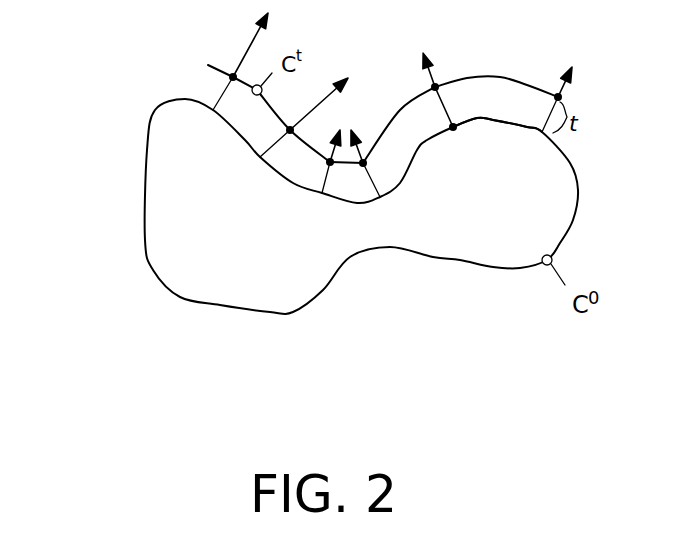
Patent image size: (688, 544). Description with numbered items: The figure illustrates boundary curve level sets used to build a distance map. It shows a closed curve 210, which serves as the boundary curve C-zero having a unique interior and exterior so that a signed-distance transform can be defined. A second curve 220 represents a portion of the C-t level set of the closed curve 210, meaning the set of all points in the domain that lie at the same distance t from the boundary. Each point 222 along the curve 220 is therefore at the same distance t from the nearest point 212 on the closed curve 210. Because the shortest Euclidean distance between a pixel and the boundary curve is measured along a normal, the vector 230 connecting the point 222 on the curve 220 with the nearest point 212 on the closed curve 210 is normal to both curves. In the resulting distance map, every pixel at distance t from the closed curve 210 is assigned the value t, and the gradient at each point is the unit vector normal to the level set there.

The closed curve 210 is at (140, 208).
The nearest point 212 is at (460, 128).
The curve 220 is at (503, 77).
The point 222 is at (428, 83).
The vector 230 is at (447, 98).